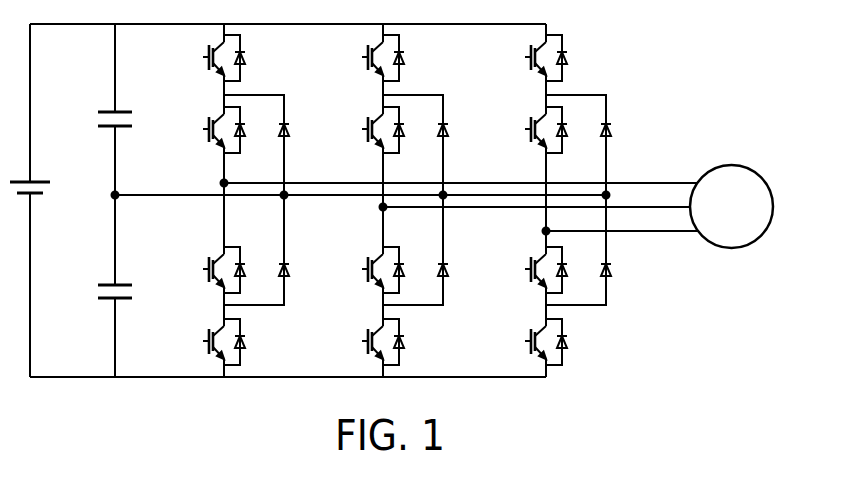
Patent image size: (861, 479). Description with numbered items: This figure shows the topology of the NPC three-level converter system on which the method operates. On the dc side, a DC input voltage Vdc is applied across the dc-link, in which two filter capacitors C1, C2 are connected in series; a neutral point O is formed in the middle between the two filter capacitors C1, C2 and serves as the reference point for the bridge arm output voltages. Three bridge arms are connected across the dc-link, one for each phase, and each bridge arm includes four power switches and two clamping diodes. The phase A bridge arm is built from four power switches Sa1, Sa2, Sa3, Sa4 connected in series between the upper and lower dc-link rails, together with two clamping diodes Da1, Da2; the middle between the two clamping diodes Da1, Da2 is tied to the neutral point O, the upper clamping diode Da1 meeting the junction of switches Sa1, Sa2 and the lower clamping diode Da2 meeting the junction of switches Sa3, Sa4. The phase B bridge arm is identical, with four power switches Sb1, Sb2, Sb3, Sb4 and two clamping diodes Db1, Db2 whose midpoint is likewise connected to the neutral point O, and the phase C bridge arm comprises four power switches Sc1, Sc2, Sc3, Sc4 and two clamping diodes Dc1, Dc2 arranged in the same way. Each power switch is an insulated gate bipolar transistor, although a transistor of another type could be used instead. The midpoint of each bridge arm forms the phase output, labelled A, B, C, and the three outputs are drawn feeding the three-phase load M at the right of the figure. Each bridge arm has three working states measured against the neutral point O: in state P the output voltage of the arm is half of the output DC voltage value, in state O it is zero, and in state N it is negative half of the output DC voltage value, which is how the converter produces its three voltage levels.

The DC input voltage Vdc is at (43, 200).
The filter capacitor C1 is at (104, 100).
The filter capacitor C2 is at (104, 272).
The neutral point O is at (343, 195).
The power switch Sa1 is at (202, 58).
The power switch Sa2 is at (202, 130).
The power switch Sa3 is at (202, 270).
The power switch Sa4 is at (202, 342).
The power switch Sb1 is at (361, 58).
The power switch Sb2 is at (361, 130).
The power switch Sb3 is at (361, 270).
The power switch Sb4 is at (361, 342).
The power switch Sc1 is at (524, 58).
The power switch Sc2 is at (524, 130).
The power switch Sc3 is at (524, 270).
The power switch Sc4 is at (524, 342).
The clamping diode Da1 is at (278, 147).
The clamping diode Da2 is at (278, 256).
The clamping diode Db1 is at (437, 147).
The clamping diode Db2 is at (437, 256).
The clamping diode Dc1 is at (599, 147).
The clamping diode Dc2 is at (599, 256).
The phase A bridge arm A is at (446, 175).
The phase B bridge arm B is at (522, 222).
The phase C bridge arm C is at (606, 232).
The three-phase motor M is at (731, 206).